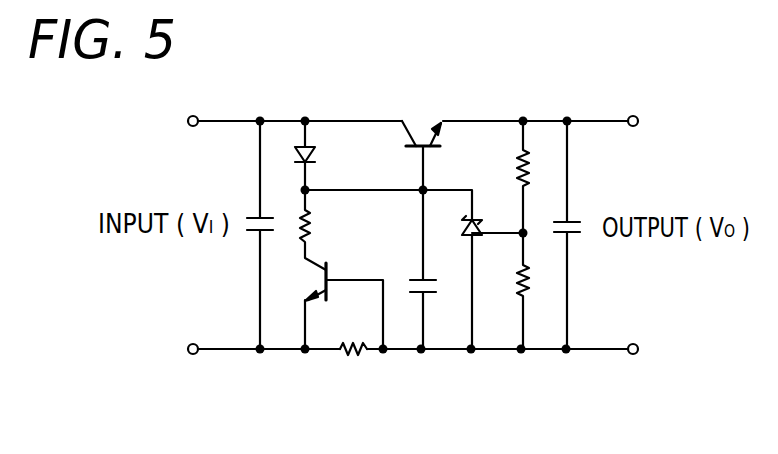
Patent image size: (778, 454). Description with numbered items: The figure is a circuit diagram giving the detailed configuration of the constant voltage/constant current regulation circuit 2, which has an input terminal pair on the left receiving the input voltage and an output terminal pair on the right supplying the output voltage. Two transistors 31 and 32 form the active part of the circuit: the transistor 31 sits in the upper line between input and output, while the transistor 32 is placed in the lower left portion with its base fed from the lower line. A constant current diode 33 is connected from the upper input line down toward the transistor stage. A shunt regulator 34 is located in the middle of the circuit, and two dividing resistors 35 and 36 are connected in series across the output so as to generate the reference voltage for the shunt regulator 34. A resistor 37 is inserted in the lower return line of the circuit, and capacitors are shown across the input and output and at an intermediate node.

The constant voltage/constant current regulation circuit 2 is at (524, 85).
The transistor 31 is at (424, 133).
The transistor 32 is at (330, 268).
The constant current diode 33 is at (316, 156).
The shunt regulator 34 is at (462, 229).
The dividing resistor 35 is at (516, 168).
The dividing resistor 36 is at (528, 290).
The resistor 37 is at (355, 358).